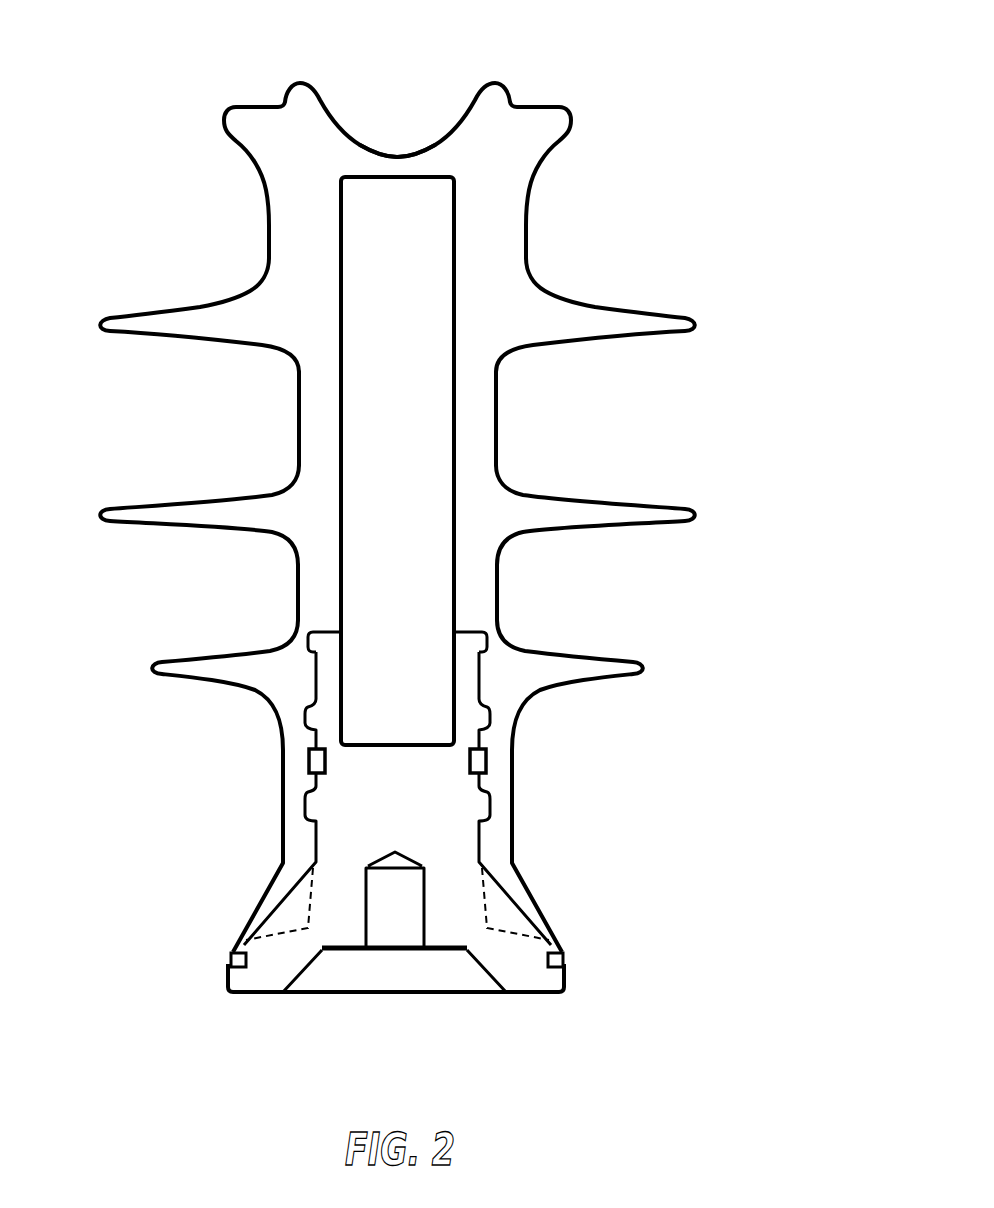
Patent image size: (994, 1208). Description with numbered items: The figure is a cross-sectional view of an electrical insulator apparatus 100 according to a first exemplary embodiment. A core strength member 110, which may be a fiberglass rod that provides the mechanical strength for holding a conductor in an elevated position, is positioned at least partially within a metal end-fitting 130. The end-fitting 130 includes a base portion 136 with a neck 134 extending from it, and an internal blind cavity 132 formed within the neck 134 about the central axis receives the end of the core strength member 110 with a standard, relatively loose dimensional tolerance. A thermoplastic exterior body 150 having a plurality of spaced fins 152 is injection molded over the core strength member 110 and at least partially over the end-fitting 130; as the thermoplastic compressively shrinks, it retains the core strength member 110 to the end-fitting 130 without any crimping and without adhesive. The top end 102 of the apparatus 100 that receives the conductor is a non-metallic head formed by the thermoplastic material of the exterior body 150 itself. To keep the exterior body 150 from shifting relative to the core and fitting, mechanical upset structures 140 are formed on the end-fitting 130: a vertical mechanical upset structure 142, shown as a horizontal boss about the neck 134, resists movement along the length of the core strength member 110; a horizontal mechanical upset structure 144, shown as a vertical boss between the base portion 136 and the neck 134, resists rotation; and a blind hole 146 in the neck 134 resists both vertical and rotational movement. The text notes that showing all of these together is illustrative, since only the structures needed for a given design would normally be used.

The electrical insulator apparatus 100 is at (747, 143).
The top end 102 is at (382, 152).
The core strength member 110 is at (392, 268).
The end-fitting 130 is at (412, 817).
The cavity 132 is at (465, 617).
The neck 134 is at (463, 688).
The base portion 136 is at (523, 978).
The mechanical upset structures 140 is at (262, 773).
The vertical mechanical upset structure 142 is at (303, 725).
The horizontal mechanical upset structure 144 is at (278, 910).
The blind hole 146 is at (308, 772).
The thermoplastic exterior body 150 is at (505, 206).
The fins 152 is at (190, 323).